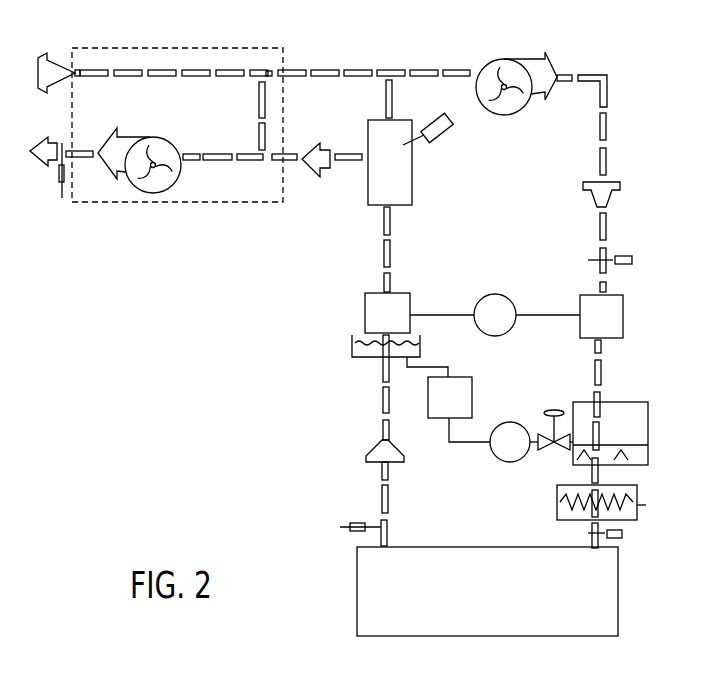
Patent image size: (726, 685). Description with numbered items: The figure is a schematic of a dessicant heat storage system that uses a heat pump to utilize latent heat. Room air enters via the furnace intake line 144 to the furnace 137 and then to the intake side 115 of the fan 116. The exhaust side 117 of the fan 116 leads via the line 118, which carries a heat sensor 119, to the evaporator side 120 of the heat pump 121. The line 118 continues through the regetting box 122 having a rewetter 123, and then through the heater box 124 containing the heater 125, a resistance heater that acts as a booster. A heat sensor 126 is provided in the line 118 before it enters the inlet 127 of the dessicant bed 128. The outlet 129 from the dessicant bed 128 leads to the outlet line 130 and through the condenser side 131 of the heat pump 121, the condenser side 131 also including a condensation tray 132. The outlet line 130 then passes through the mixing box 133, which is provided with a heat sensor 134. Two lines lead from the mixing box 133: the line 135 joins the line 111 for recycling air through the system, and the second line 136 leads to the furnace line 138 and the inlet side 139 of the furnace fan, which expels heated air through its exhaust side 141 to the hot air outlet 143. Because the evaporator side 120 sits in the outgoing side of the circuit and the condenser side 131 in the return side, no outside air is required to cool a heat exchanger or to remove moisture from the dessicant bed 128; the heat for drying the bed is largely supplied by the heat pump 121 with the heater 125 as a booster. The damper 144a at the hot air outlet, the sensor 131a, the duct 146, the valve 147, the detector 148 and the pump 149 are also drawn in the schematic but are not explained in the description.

The line 111 is at (300, 73).
The intake side 115 is at (478, 82).
The fan 116 is at (514, 110).
The exhaust side 117 is at (548, 84).
The line 118 is at (607, 160).
The heat sensor 119 is at (620, 256).
The evaporator side 120 is at (623, 318).
The heat pump 121 is at (500, 293).
The regetting box 122 is at (617, 402).
The rewetter 123 is at (627, 460).
The heater box 124 is at (558, 517).
The heater 125 is at (562, 500).
The heat sensor 126 is at (622, 534).
The inlet 127 is at (590, 548).
The dessicant bed 128 is at (568, 637).
The outlet 129 is at (388, 541).
The outlet line 130 is at (382, 397).
The condenser side 131 is at (375, 291).
The sensor 131a is at (356, 522).
The condensation tray 132 is at (410, 352).
The mixing box 133 is at (413, 188).
The heat sensor 134 is at (450, 135).
The line 135 is at (386, 103).
The second line 136 is at (352, 163).
The furnace 137 is at (300, 38).
The furnace line 138 is at (253, 161).
The inlet side 139 is at (181, 157).
The exhaust side 141 is at (107, 163).
The hot air outlet 143 is at (55, 167).
The furnace intake line 144 is at (163, 70).
The damper 144a is at (62, 184).
The branch duct 146 is at (259, 105).
The valve 147 is at (540, 434).
The drain detector 148 is at (473, 394).
The pump 149 is at (505, 421).